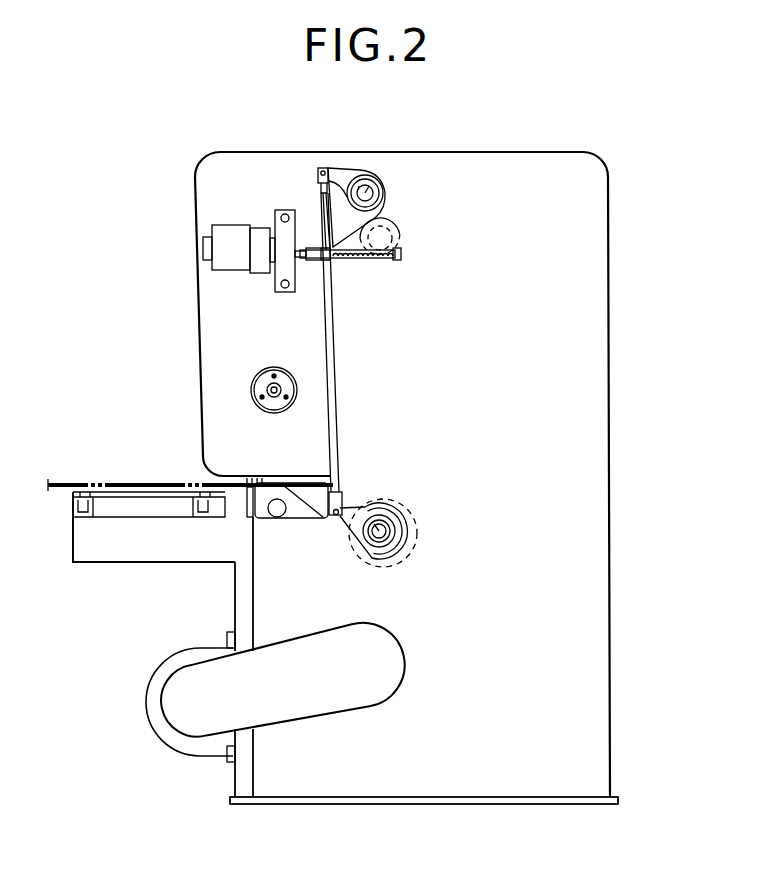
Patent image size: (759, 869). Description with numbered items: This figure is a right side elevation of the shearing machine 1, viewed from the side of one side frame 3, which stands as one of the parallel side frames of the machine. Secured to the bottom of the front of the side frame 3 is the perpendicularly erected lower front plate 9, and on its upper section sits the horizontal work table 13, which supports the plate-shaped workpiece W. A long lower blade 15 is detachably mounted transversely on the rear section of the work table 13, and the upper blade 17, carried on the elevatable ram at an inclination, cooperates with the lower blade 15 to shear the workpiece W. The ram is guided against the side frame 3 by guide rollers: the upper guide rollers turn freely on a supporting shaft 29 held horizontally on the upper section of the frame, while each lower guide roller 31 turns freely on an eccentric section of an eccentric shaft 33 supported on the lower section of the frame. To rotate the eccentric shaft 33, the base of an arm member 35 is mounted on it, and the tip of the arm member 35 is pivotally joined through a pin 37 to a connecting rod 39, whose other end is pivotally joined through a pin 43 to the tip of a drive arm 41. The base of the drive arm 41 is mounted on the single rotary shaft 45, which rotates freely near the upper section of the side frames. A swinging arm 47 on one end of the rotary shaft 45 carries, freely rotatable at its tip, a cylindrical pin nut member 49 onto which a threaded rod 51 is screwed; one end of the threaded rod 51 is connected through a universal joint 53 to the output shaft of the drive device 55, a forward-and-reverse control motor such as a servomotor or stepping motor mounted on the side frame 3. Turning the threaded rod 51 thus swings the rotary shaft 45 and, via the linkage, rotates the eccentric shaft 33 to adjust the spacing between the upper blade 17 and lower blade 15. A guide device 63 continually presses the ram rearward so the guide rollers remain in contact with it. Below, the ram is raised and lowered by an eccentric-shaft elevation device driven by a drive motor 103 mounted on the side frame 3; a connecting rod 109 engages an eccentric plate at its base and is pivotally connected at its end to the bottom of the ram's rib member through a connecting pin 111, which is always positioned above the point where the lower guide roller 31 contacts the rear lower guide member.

The shearing machine 1 is at (580, 133).
The side frame 3 is at (603, 713).
The lower front plate 9 is at (240, 784).
The work table 13 is at (135, 548).
The lower blade 15 is at (247, 497).
The upper blade 17 is at (258, 480).
The supporting shaft 29 is at (398, 225).
The lower guide roller 31 is at (400, 502).
The eccentric shaft 33 is at (383, 538).
The arm member 35 is at (353, 530).
The pin 37 is at (338, 515).
The connecting rod 39 is at (338, 423).
The drive arm 41 is at (343, 172).
The pin 43 is at (326, 168).
The rotary shaft 45 is at (372, 188).
The swinging arm 47 is at (343, 220).
The pin nut member 49 is at (338, 260).
The threaded rod 51 is at (364, 260).
The universal joint 53 is at (313, 260).
The drive device 55 is at (233, 233).
The guide device 63 is at (234, 387).
The drive motor 103 is at (160, 682).
The connecting rod 109 is at (308, 513).
The connecting pin 111 is at (277, 513).
The workpiece W is at (80, 483).